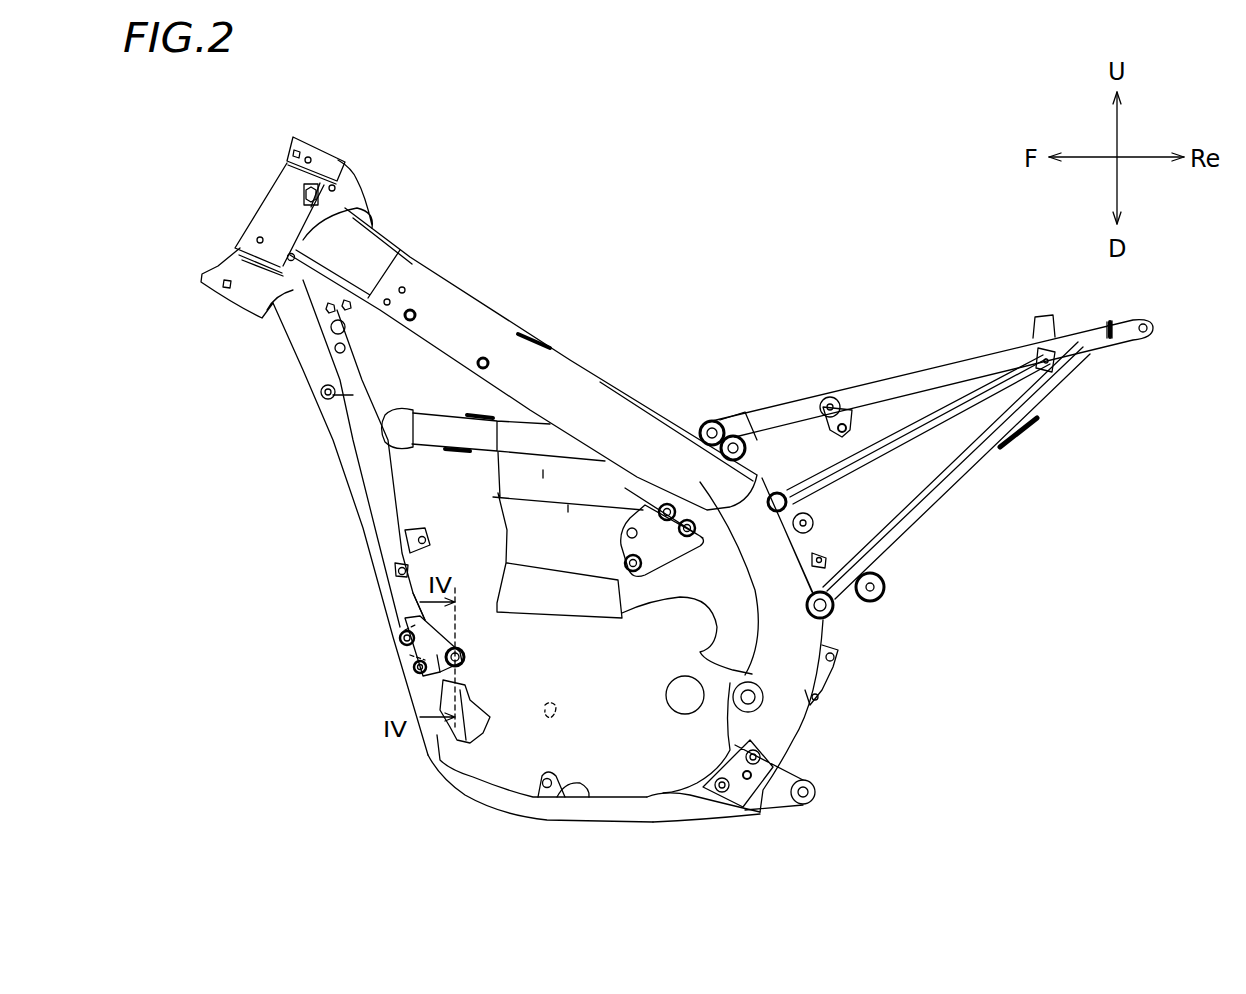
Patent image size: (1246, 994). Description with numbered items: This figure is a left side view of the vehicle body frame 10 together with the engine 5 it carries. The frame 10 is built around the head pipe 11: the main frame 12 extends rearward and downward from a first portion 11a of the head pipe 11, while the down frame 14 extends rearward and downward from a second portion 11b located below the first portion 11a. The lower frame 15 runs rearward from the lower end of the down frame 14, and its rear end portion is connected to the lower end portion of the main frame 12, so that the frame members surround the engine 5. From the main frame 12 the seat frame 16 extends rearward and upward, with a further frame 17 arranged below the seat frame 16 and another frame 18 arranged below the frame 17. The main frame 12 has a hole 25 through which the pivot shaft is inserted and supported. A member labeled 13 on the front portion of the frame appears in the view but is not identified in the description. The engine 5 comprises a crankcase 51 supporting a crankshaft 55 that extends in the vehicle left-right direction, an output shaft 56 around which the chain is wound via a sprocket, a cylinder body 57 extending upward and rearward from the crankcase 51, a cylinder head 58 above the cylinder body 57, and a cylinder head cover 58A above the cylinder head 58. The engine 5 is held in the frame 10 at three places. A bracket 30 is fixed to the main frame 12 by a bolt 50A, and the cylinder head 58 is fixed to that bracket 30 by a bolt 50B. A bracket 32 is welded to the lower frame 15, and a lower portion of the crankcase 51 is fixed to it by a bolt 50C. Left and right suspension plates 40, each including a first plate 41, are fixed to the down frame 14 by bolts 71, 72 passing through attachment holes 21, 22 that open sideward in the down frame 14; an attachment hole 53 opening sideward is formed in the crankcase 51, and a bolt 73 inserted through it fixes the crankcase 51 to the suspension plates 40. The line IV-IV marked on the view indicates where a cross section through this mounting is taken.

The vehicle body frame 10 is at (335, 129).
The head pipe 11 is at (283, 210).
The first portion 11a is at (347, 196).
The second portion 11b is at (293, 290).
The main frame 12 is at (460, 320).
The down frame 13 is at (281, 366).
The down frame 14 is at (373, 495).
The lower frame 15 is at (527, 823).
The seat frame 16 is at (860, 388).
The frame 17 is at (900, 427).
The frame 18 is at (963, 452).
The attachment hole 21 is at (380, 638).
The attachment hole 22 is at (410, 655).
The hole 25 is at (762, 703).
The bracket 30 is at (665, 480).
The bracket 32 is at (585, 795).
The suspension plate 40 is at (445, 630).
The first plate 41 is at (420, 653).
The engine 5 is at (478, 500).
The bolt 50A is at (722, 428).
The bolt 50B is at (770, 622).
The bolt 50C is at (547, 790).
The crankcase 51 is at (457, 768).
The attachment hole 53 is at (440, 655).
The crankshaft 55 is at (556, 722).
The output shaft 56 is at (676, 715).
The cylinder body 57 is at (641, 503).
The cylinder head 58 is at (568, 510).
The cylinder head cover 58A is at (543, 475).
The bolt 71 is at (392, 638).
The bolt 72 is at (407, 673).
The bolt 73 is at (407, 687).